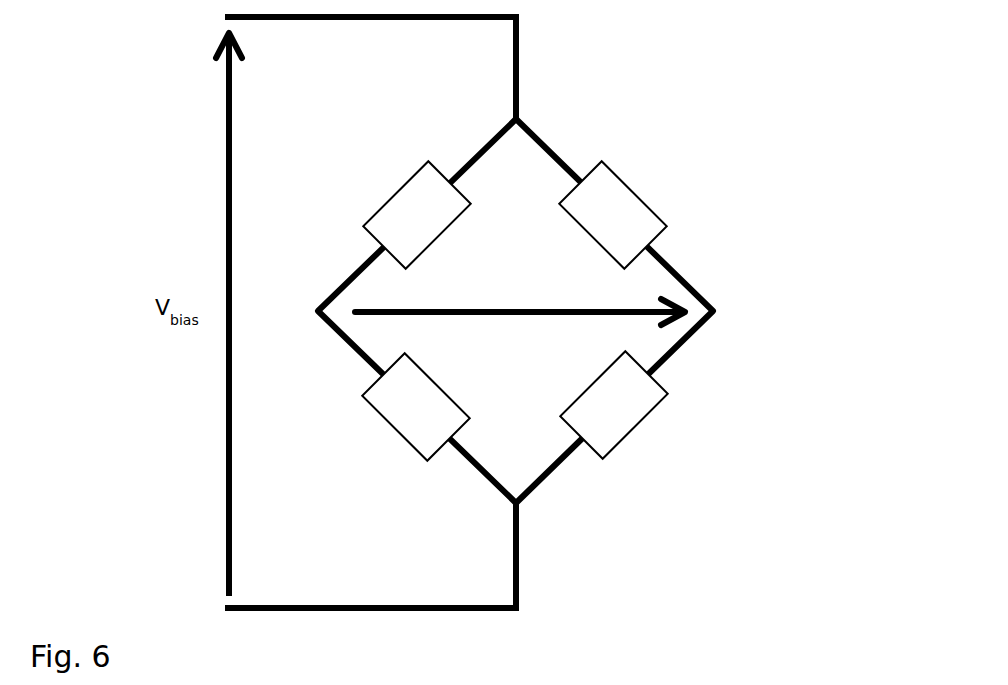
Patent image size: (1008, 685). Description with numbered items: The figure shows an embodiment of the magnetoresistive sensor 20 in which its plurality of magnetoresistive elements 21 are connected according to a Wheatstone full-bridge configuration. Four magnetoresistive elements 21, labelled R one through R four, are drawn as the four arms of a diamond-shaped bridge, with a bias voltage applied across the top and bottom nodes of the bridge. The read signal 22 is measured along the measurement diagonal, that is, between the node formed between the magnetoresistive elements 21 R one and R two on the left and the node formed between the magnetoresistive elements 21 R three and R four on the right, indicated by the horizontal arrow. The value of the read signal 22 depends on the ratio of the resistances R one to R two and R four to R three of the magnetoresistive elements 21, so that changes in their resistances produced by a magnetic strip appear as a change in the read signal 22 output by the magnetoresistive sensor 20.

The magnetoresistive sensor 20 is at (652, 597).
The magnetoresistive elements 21 is at (390, 212).
The read signal 22 is at (520, 298).